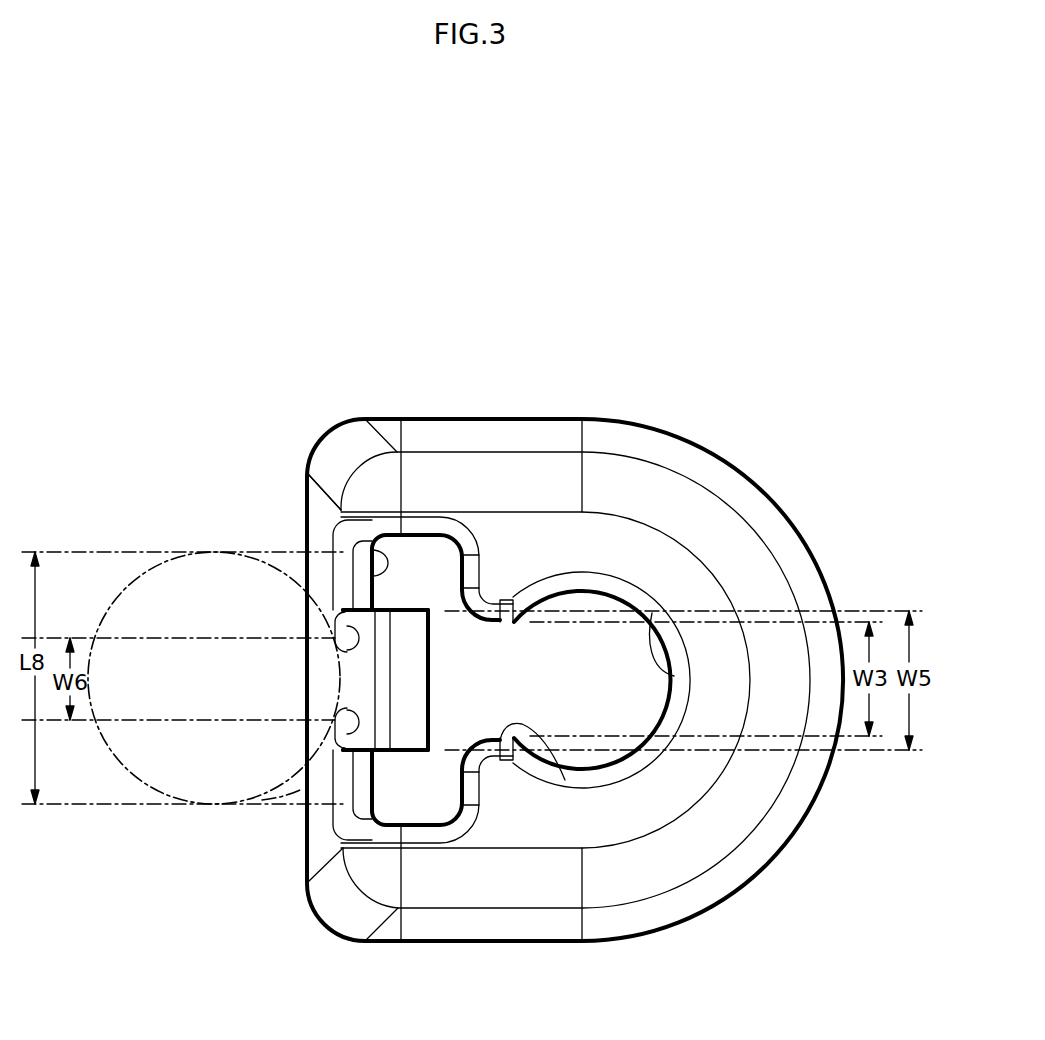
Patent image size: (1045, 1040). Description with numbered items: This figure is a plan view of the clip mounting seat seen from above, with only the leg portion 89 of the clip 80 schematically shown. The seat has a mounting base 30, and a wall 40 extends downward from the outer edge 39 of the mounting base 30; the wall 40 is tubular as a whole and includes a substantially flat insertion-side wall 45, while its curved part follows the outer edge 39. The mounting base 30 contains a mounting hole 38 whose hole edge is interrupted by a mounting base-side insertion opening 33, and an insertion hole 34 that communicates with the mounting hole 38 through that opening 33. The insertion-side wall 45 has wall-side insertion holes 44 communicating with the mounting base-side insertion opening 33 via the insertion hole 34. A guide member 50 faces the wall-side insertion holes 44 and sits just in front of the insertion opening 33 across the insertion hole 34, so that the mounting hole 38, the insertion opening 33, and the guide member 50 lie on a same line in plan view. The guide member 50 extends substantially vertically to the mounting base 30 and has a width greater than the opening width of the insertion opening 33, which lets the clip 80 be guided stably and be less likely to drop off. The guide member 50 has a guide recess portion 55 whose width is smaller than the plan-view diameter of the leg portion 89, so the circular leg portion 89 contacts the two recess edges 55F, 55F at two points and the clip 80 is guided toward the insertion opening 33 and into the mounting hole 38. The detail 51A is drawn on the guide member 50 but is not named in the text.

The mounting base 30 is at (527, 540).
The mounting base-side insertion opening 33 is at (565, 780).
The insertion hole 34 is at (447, 533).
The mounting hole 38 is at (652, 613).
The outer edge 39 is at (636, 452).
The wall 40 is at (718, 887).
The wall-side insertion holes 44 is at (367, 573).
The insertion-side wall 45 is at (321, 510).
The guide member 50 is at (350, 755).
The tongue inner rib 51A is at (407, 710).
The guide recess portion 55 is at (402, 700).
The recess edges 55F is at (334, 638).
The clip 80 is at (232, 802).
The leg portion 89 is at (273, 795).